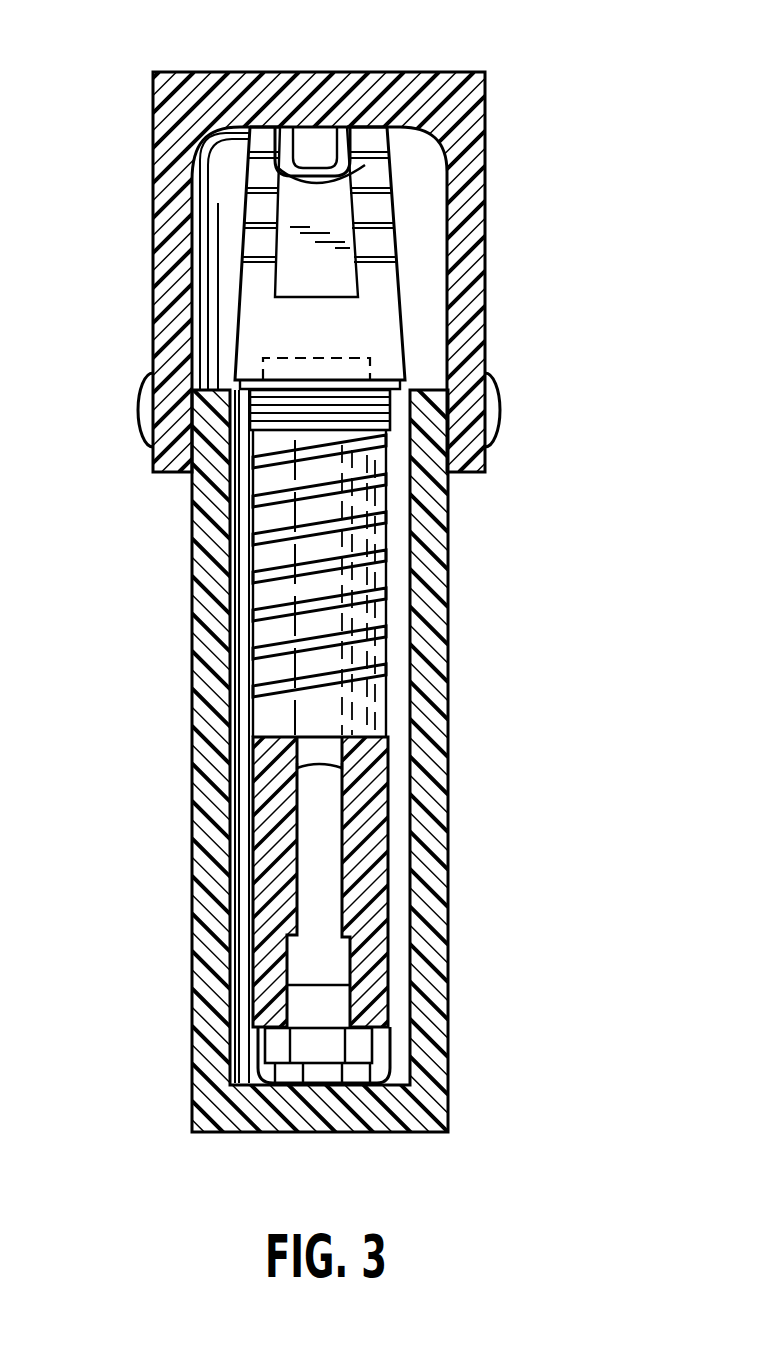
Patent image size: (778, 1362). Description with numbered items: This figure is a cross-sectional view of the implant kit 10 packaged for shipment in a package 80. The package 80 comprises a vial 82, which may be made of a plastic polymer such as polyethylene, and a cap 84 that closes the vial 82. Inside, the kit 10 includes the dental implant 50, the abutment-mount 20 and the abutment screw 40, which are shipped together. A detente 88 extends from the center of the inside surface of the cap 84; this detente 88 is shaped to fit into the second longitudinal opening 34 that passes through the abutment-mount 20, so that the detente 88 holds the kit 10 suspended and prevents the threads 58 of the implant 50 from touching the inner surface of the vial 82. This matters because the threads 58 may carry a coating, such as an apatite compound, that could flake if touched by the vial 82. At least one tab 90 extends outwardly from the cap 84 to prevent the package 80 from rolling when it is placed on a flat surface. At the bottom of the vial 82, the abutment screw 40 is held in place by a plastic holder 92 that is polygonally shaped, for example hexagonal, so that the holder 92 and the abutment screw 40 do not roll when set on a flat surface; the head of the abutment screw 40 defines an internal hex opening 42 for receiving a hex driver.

The implant kit 10 is at (250, 553).
The abutment-mount 20 is at (403, 306).
The second longitudinal opening 34 is at (397, 127).
The abutment screw 40 is at (327, 885).
The internal hex opening 42 is at (338, 1035).
The dental implant 50 is at (378, 655).
The threads 58 is at (385, 588).
The package 80 is at (389, 681).
The vial 82 is at (430, 803).
The cap 84 is at (472, 193).
The detente 88 is at (320, 147).
The tab 90 is at (500, 403).
The plastic holder 92 is at (380, 968).